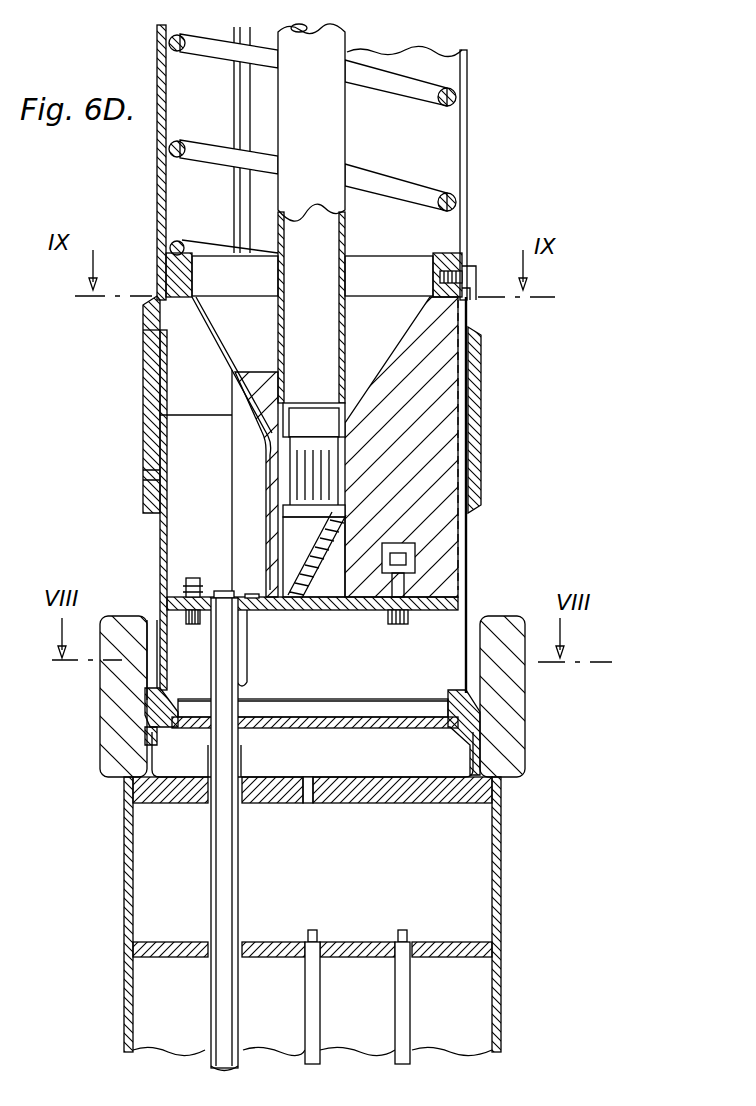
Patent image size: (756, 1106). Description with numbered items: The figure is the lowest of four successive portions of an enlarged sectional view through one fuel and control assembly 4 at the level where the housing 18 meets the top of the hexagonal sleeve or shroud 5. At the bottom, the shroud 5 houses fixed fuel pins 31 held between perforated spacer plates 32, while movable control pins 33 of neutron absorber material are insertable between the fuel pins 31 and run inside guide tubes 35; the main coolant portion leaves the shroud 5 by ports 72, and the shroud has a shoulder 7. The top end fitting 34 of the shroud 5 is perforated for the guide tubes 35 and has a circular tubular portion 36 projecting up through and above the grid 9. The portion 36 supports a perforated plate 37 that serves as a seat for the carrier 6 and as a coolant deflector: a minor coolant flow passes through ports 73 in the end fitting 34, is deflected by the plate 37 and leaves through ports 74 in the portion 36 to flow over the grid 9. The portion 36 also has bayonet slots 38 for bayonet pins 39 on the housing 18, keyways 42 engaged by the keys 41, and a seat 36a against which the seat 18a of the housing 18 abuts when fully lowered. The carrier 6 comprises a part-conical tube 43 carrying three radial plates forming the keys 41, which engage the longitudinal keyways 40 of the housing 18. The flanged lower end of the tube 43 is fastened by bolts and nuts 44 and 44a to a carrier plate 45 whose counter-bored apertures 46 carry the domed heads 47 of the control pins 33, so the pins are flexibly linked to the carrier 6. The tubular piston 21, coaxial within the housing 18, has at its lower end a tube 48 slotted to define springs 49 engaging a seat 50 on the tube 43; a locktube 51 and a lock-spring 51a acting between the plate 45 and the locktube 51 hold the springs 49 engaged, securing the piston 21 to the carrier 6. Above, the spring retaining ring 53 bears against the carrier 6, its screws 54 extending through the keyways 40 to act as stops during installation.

The housing 18 is at (160, 50).
The seat on the housing 18a is at (158, 345).
The tubular piston 21 is at (332, 140).
The longitudinal keyways 40 is at (468, 205).
The spring retaining ring 53 is at (178, 265).
The screws 54 is at (470, 292).
The carrier 6 is at (398, 345).
The part-conical tube 43 is at (240, 360).
The tube 48 is at (292, 418).
The keys 41 is at (468, 382).
The seat on the portion 36a is at (158, 412).
The bayonet pins 39 is at (155, 477).
The bayonet slots 38 is at (160, 527).
The seat 50 is at (285, 520).
The springs 49 is at (283, 521).
The domed heads 47 is at (224, 597).
The locktube 51 is at (294, 550).
The bolts and nuts 44 is at (190, 596).
The counter-bored apertures 46 is at (252, 596).
The bolts and nuts 44a is at (402, 563).
The keyways 42 is at (465, 602).
The tubular portion 36 is at (162, 604).
The carrier plate 45 is at (250, 612).
The lock-spring 51a is at (312, 604).
The grid 9 is at (506, 700).
The shoulder 7 is at (500, 792).
The guide tubes 35 is at (246, 746).
The ports 73 is at (312, 778).
The plate 37 is at (378, 727).
The ports 74 is at (431, 752).
The top end fitting 34 is at (380, 804).
The ports 72 is at (127, 872).
The control pins 33 is at (226, 860).
The spacer plates 32 is at (162, 942).
The assembly 4 is at (272, 1008).
The fuel pins 31 is at (320, 1046).
The sleeve or shroud 5 is at (500, 1006).